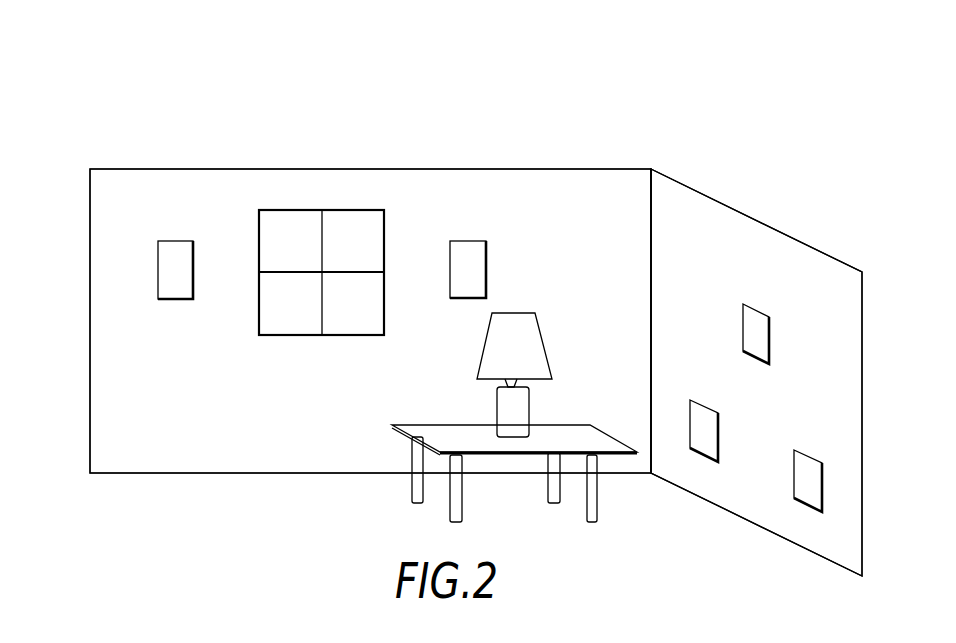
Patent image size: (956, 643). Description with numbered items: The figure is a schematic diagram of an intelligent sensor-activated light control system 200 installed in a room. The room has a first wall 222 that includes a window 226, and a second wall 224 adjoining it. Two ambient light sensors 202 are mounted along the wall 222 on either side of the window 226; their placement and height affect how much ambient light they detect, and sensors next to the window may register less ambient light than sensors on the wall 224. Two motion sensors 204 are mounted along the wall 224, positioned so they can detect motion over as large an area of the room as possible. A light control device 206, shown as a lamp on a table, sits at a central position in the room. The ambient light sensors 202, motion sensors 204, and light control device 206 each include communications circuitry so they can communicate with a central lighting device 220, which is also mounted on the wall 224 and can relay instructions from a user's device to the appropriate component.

The intelligent sensor-activated light control system 200 is at (116, 104).
The wall 222 is at (284, 178).
The wall 224 is at (732, 222).
The window 226 is at (384, 228).
The ambient light sensor 202 is at (178, 300).
The central lighting device 220 is at (767, 315).
The motion sensor 204 is at (706, 400).
The light control device 206 is at (458, 390).